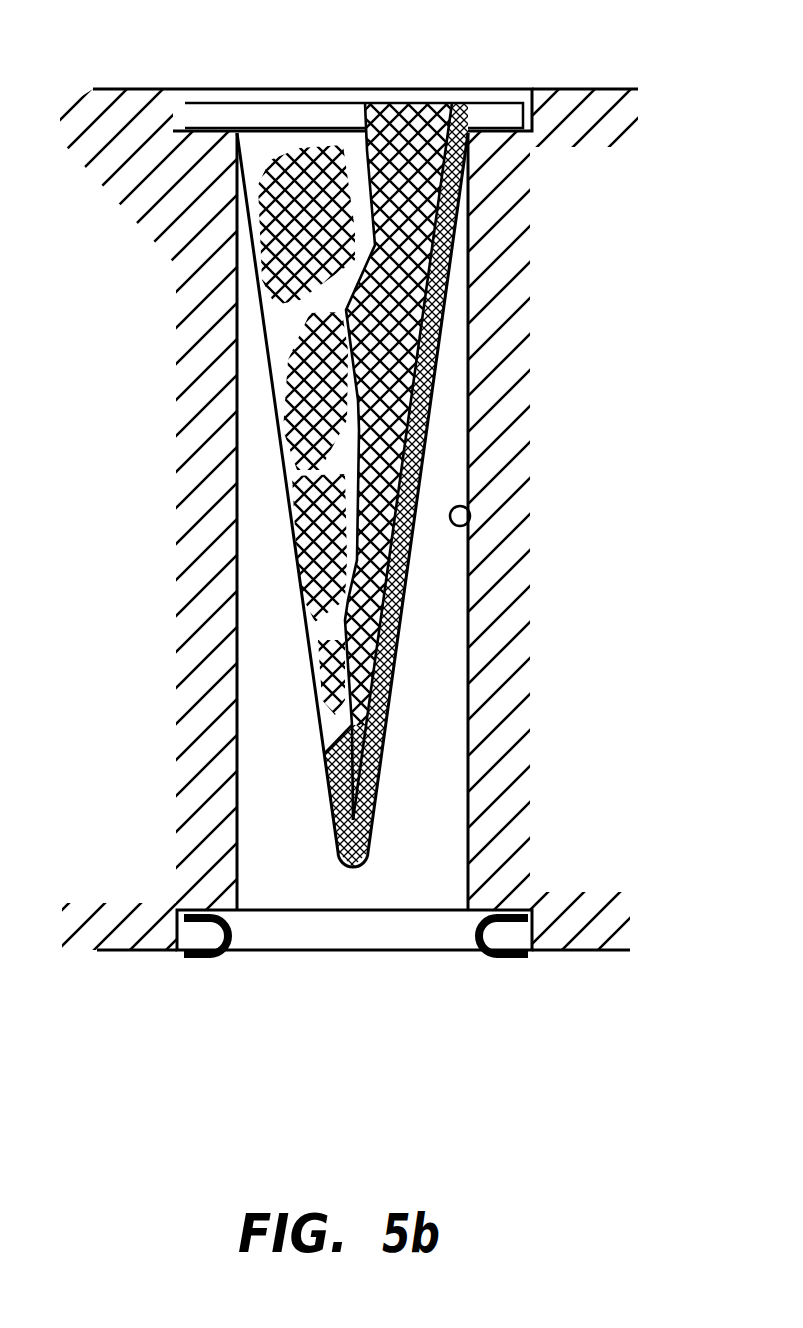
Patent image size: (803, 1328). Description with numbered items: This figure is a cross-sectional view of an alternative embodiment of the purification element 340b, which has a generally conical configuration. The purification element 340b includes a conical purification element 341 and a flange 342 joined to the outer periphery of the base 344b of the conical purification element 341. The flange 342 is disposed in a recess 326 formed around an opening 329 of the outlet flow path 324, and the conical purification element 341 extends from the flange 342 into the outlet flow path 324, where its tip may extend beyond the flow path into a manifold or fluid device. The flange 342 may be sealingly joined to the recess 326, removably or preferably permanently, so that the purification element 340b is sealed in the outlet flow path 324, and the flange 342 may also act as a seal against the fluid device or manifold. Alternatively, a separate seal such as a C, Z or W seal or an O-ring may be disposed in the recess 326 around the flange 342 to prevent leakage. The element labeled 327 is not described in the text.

The flange 342 is at (245, 118).
The base of the conical purification element 344b is at (404, 134).
The recess 326 is at (524, 116).
The opening of the outlet flow path 329 is at (470, 230).
The bore wall 327 is at (463, 532).
The outlet flow path 324 is at (427, 768).
The conical purification element 341 is at (292, 358).
The purification element 340b is at (290, 432).